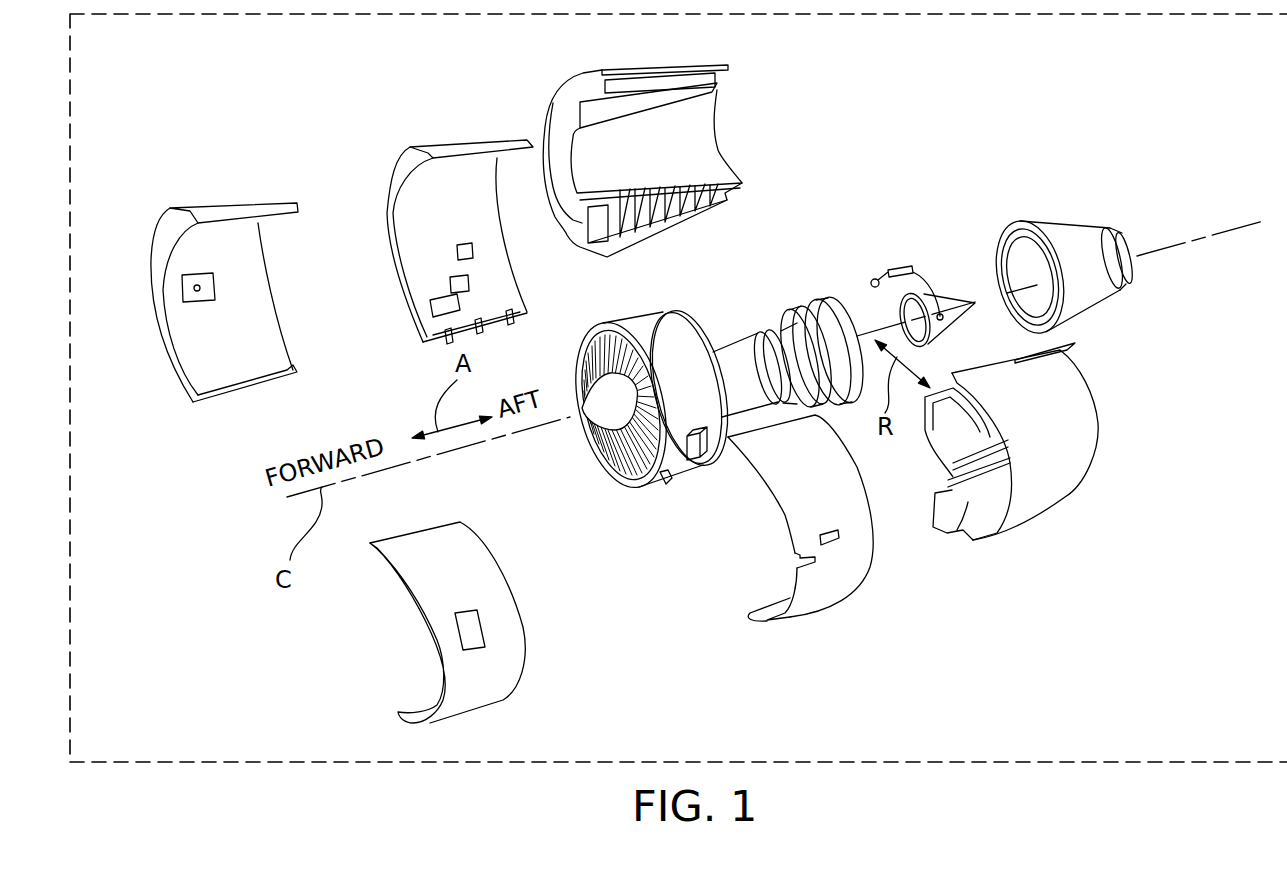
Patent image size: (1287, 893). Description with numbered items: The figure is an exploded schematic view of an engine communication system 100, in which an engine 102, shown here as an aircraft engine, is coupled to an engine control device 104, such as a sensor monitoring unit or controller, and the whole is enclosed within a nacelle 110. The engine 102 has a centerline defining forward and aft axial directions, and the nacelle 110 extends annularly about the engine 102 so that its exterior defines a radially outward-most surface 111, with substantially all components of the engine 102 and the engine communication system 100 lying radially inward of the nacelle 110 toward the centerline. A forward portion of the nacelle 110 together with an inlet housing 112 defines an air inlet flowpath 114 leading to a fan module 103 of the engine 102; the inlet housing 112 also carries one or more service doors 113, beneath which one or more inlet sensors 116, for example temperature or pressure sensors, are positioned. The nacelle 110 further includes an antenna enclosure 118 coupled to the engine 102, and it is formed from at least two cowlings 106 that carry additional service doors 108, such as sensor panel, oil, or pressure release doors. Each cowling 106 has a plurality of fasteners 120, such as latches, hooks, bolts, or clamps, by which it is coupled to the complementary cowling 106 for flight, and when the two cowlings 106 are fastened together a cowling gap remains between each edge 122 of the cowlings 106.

The engine communication system 100 is at (474, 76).
The engine 102 is at (728, 501).
The fan module 103 is at (590, 425).
The engine control device 104 is at (707, 465).
The cowlings 106 is at (553, 368).
The additional service doors 108 is at (473, 250).
The nacelle 110 is at (1140, 372).
The radially outward-most surface 111 is at (836, 596).
The inlet housing 112 is at (382, 438).
The service doors 113 is at (480, 626).
The air inlet flowpath 114 is at (224, 512).
The inlet sensors 116 is at (200, 288).
The antenna enclosure 118 is at (660, 477).
The fasteners 120 is at (428, 341).
The edge 122 is at (478, 334).